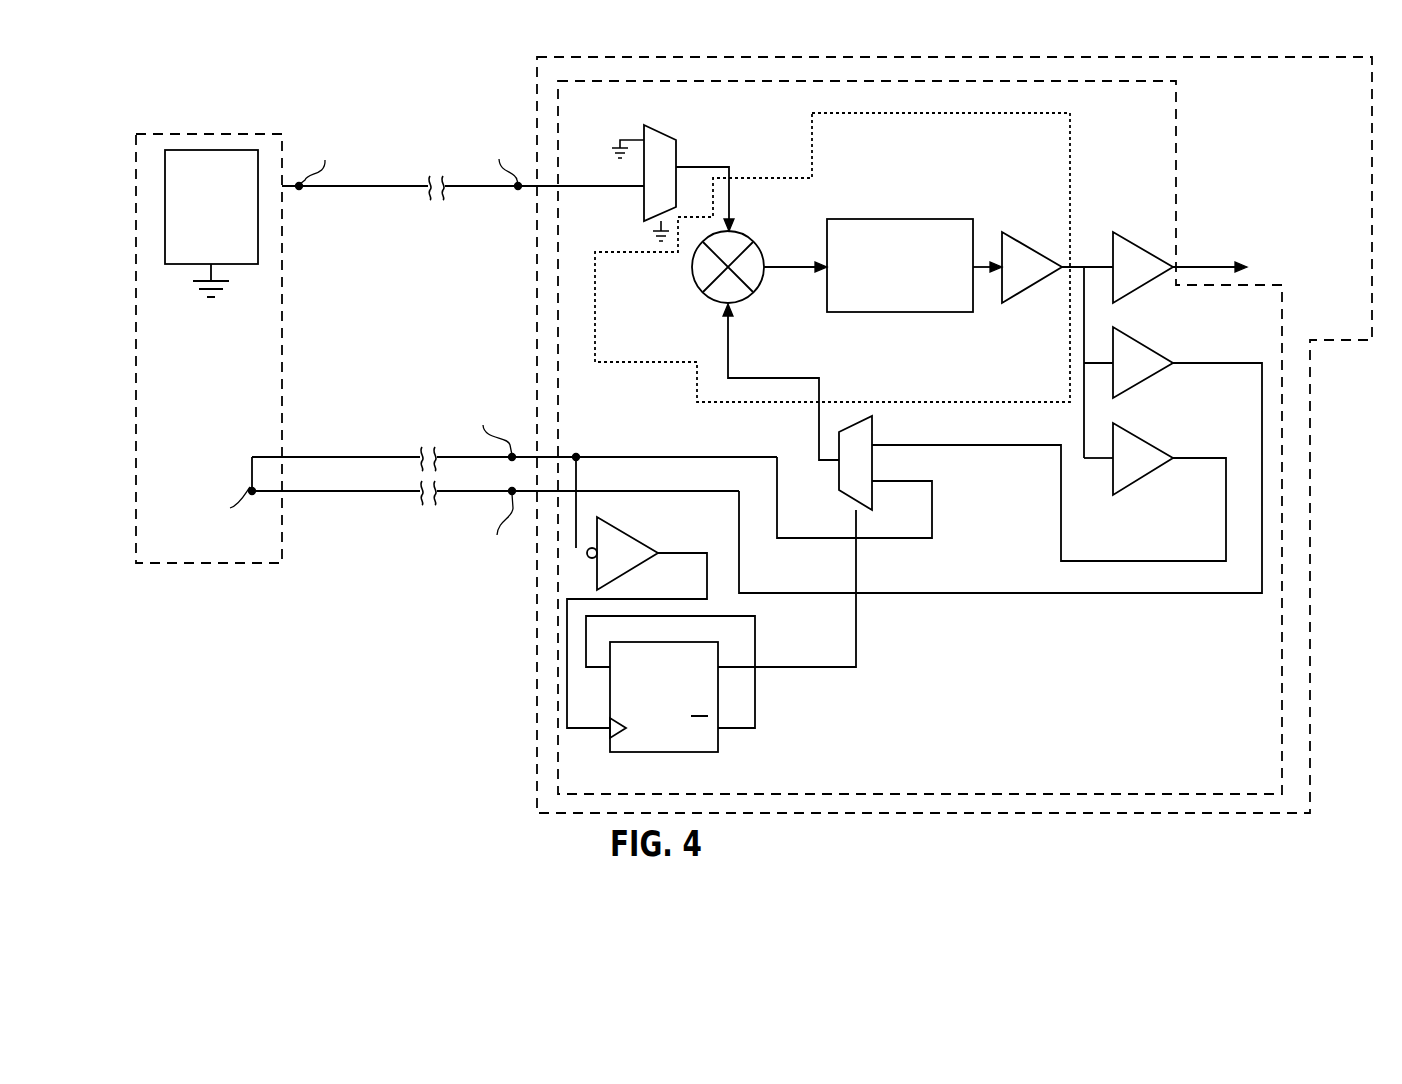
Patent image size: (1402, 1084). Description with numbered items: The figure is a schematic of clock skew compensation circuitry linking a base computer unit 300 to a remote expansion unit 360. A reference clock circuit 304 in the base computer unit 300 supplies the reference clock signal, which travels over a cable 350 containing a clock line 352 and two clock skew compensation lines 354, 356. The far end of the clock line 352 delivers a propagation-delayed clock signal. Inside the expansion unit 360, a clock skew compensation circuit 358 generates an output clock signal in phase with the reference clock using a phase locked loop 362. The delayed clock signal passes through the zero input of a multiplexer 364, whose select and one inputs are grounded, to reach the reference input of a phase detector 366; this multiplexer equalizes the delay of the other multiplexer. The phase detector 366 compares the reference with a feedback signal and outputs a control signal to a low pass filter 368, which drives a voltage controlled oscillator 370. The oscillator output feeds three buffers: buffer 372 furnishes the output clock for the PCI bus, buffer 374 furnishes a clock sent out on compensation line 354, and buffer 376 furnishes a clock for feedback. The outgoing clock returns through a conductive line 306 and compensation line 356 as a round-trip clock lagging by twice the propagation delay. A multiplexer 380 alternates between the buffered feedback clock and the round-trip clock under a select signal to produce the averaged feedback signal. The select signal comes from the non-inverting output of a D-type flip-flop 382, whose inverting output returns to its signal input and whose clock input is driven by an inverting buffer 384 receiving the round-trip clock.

The base computer unit 300 is at (248, 98).
The reference clock circuit 304 is at (250, 265).
The conductive line 306 is at (250, 460).
The cable 350 is at (330, 491).
The clock line 352 is at (482, 190).
The clock skew compensation line 354 is at (362, 457).
The clock skew compensation line 356 is at (347, 493).
The clock skew compensation circuit 358 is at (1176, 197).
The expansion unit 360 is at (1067, 813).
The phase locked loop 362 is at (651, 363).
The multiplexer 364 is at (676, 150).
The phase detector 366 is at (692, 267).
The low pass filter 368 is at (923, 313).
The voltage controlled oscillator 370 is at (1032, 287).
The buffer 372 is at (1125, 235).
The buffer 374 is at (1140, 340).
The buffer 376 is at (1137, 482).
The multiplexer 380 is at (840, 490).
The D-type flip-flop 382 is at (720, 738).
The inverting buffer 384 is at (628, 530).